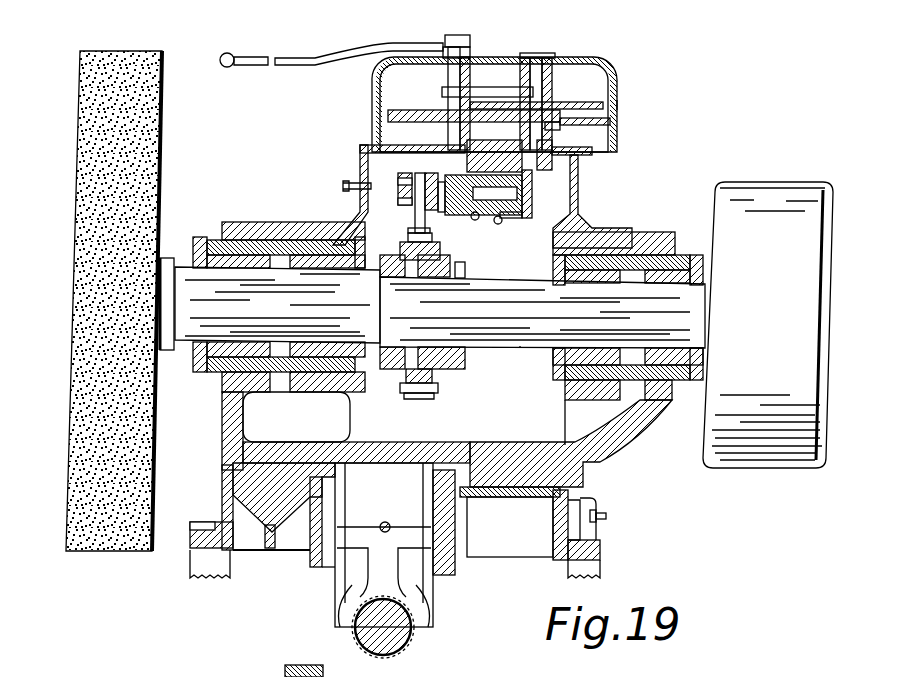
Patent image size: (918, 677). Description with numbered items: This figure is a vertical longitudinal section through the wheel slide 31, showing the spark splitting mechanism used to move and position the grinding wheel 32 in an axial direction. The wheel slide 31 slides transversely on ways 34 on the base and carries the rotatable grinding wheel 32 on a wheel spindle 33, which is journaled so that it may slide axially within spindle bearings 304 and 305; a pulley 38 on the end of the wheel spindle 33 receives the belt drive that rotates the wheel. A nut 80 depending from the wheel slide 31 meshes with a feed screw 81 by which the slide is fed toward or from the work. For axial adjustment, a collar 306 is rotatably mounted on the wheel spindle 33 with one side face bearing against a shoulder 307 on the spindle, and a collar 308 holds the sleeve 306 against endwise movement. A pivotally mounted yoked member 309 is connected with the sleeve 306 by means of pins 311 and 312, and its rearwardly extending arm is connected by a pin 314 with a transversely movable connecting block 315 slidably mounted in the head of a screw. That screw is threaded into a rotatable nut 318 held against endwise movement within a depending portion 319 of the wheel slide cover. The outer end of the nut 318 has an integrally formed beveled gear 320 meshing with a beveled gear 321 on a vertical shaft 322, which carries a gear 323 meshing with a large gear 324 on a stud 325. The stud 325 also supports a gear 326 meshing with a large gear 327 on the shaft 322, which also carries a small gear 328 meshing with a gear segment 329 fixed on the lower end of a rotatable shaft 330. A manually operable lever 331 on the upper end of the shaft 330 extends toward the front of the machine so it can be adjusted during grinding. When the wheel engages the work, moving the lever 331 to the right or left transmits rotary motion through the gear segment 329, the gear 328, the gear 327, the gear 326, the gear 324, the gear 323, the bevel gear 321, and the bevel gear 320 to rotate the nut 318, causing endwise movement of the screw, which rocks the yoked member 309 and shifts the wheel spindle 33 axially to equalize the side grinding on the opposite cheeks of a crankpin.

The wheel slide 31 is at (633, 452).
The grinding wheel 32 is at (150, 439).
The wheel spindle 33 is at (520, 348).
The ways 34 is at (219, 484).
The pulley 38 is at (772, 182).
The nut 80 is at (435, 588).
The feed screw 81 is at (403, 643).
The spindle bearing 304 is at (311, 237).
The spindle bearing 305 is at (615, 235).
The collar 306 is at (403, 246).
The shoulder 307 is at (380, 300).
The collar 308 is at (467, 268).
The yoked member 309 is at (438, 378).
The pin 311 is at (399, 278).
The pin 312 is at (402, 374).
The pin 314 is at (433, 236).
The connecting block 315 is at (412, 212).
The rotatable nut 318 is at (460, 214).
The depending portion 319 is at (504, 221).
The beveled gear 320 is at (502, 197).
The beveled gear 321 is at (570, 160).
The vertical shaft 322 is at (552, 136).
The gear 323 is at (552, 120).
The large gear 324 is at (372, 104).
The stud 325 is at (436, 130).
The gear 326 is at (435, 99).
The large gear 327 is at (618, 108).
The small gear 328 is at (542, 80).
The gear segment 329 is at (496, 90).
The rotatable shaft 330 is at (442, 72).
The manually operable lever 331 is at (312, 56).